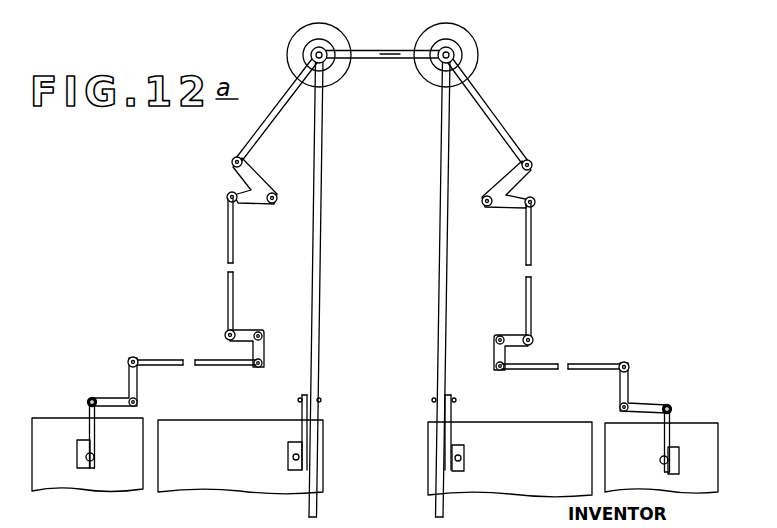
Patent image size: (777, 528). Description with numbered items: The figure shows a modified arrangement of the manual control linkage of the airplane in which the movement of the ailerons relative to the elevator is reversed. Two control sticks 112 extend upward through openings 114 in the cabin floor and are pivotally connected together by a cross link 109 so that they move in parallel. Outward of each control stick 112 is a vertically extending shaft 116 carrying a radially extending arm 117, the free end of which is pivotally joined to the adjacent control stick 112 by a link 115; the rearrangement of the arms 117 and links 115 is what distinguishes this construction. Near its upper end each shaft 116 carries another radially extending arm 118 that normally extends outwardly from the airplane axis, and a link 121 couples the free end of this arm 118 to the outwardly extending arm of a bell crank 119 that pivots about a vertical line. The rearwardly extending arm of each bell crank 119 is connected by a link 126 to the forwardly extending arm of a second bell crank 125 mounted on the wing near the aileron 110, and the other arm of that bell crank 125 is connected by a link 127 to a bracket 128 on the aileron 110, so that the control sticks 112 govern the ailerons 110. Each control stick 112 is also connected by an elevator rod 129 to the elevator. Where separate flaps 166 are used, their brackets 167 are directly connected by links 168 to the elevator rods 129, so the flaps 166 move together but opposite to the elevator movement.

The cross link 109 is at (390, 58).
The aileron 110 is at (66, 484).
The control stick 112 is at (292, 45).
The opening 114 is at (425, 38).
The link 115 is at (258, 117).
The vertically extending shaft 116 is at (272, 204).
The radially extending arm 117 is at (258, 180).
The radially extending arm 118 is at (230, 192).
The bell crank 119 is at (262, 325).
The link 121 is at (228, 250).
The bell crank 125 is at (136, 384).
The link 126 is at (205, 349).
The link 127 is at (89, 410).
The bracket 128 is at (80, 460).
The elevator rod 129 is at (322, 190).
The flap 166 is at (375, 458).
The flap bracket 167 is at (290, 456).
The link 168 is at (300, 428).